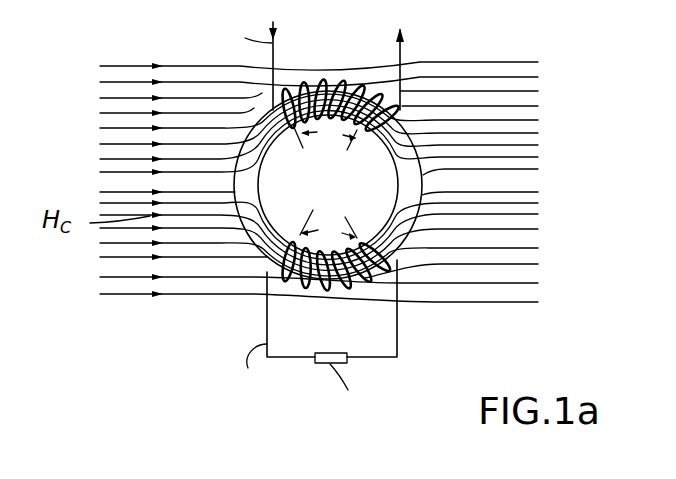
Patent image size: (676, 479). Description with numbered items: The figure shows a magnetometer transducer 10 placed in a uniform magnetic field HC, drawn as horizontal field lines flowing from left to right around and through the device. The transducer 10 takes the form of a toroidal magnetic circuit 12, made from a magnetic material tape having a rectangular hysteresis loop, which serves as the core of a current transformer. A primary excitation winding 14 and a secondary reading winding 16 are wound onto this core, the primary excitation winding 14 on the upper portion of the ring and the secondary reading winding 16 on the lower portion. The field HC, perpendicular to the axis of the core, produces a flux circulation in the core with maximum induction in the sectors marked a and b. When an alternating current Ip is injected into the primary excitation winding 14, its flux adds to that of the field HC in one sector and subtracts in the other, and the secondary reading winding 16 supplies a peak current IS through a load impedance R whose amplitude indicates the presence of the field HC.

The magnetometer transducer 10 is at (447, 56).
The toroidal magnetic circuit 12 is at (407, 182).
The primary excitation winding 14 is at (328, 76).
The secondary reading winding 16 is at (346, 290).